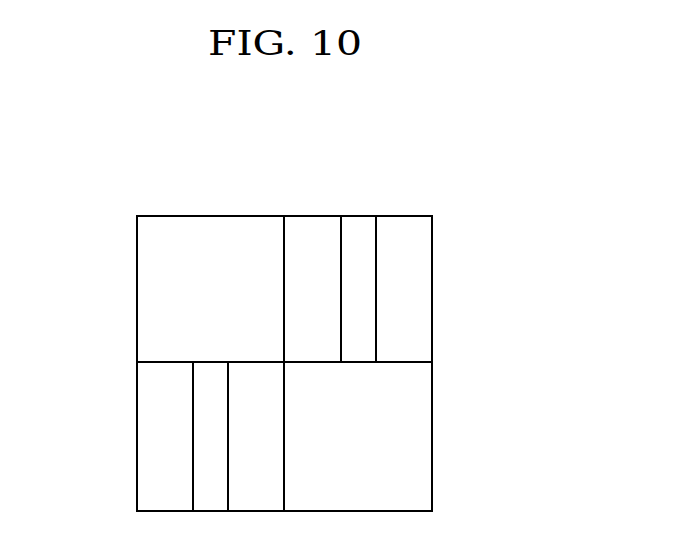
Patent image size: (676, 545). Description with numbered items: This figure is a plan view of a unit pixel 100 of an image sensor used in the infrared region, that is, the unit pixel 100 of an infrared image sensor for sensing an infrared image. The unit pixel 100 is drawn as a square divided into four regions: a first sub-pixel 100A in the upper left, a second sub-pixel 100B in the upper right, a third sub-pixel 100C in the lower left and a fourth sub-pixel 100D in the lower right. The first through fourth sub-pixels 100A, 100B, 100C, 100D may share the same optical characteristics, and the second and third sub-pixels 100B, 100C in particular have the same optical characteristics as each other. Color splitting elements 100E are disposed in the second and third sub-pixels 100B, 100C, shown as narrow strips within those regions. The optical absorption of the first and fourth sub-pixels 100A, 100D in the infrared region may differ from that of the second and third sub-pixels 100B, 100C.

The unit pixel 100 is at (459, 195).
The first sub-pixel 100A is at (237, 302).
The second sub-pixel 100B is at (430, 302).
The third sub-pixel 100C is at (283, 451).
The fourth sub-pixel 100D is at (386, 451).
The color splitting element 100E is at (208, 397).